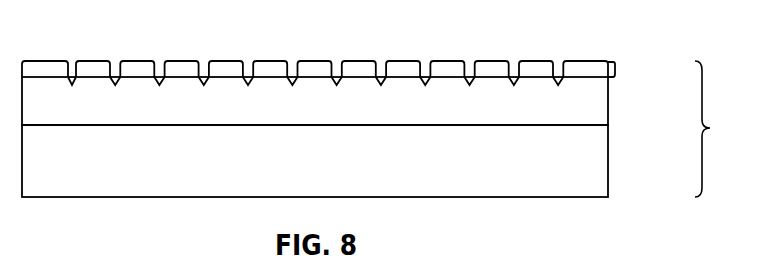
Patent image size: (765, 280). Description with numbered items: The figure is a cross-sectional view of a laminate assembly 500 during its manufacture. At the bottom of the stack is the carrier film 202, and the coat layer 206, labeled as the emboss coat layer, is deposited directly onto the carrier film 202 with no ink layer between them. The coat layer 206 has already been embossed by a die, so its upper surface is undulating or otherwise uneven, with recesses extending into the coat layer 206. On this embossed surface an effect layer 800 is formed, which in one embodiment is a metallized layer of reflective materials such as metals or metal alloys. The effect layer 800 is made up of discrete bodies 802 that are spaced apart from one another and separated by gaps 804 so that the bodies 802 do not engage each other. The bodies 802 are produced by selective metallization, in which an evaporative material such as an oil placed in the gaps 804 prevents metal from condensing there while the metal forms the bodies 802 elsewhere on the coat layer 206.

The effect layer 800 is at (345, 50).
The discrete bodies 802 is at (361, 60).
The gaps 804 is at (470, 61).
The coat layer 206 is at (600, 101).
The carrier film 202 is at (600, 161).
The laminate assembly 500 is at (728, 129).